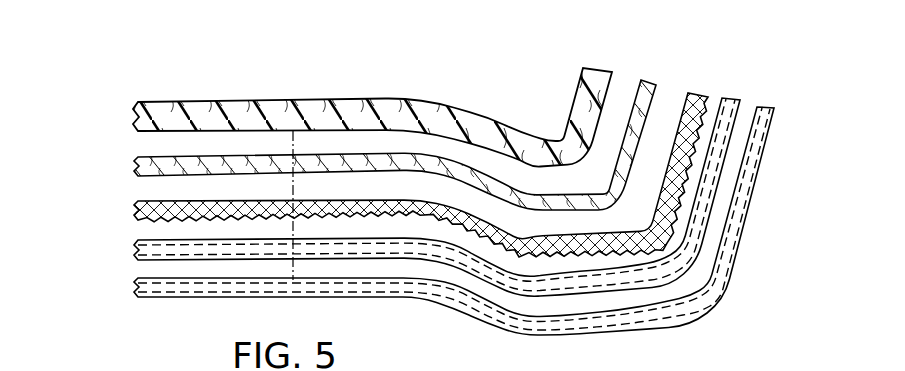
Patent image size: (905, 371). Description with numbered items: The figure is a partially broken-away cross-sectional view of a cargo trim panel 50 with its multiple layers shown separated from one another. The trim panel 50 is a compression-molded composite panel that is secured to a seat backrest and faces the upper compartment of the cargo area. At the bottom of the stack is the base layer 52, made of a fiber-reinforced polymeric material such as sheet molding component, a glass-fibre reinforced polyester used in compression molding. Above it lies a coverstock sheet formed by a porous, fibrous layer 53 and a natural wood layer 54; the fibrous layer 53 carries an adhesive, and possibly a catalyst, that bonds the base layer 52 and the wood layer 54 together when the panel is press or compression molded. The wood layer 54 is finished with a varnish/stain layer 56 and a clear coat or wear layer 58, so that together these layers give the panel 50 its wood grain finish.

The cargo trim panel 50 is at (100, 174).
The base layer 52 is at (599, 69).
The porous fibrous layer 53 is at (650, 81).
The natural wood layer 54 is at (698, 91).
The varnish/stain layer 56 is at (733, 97).
The clear coat or wear layer 58 is at (764, 106).